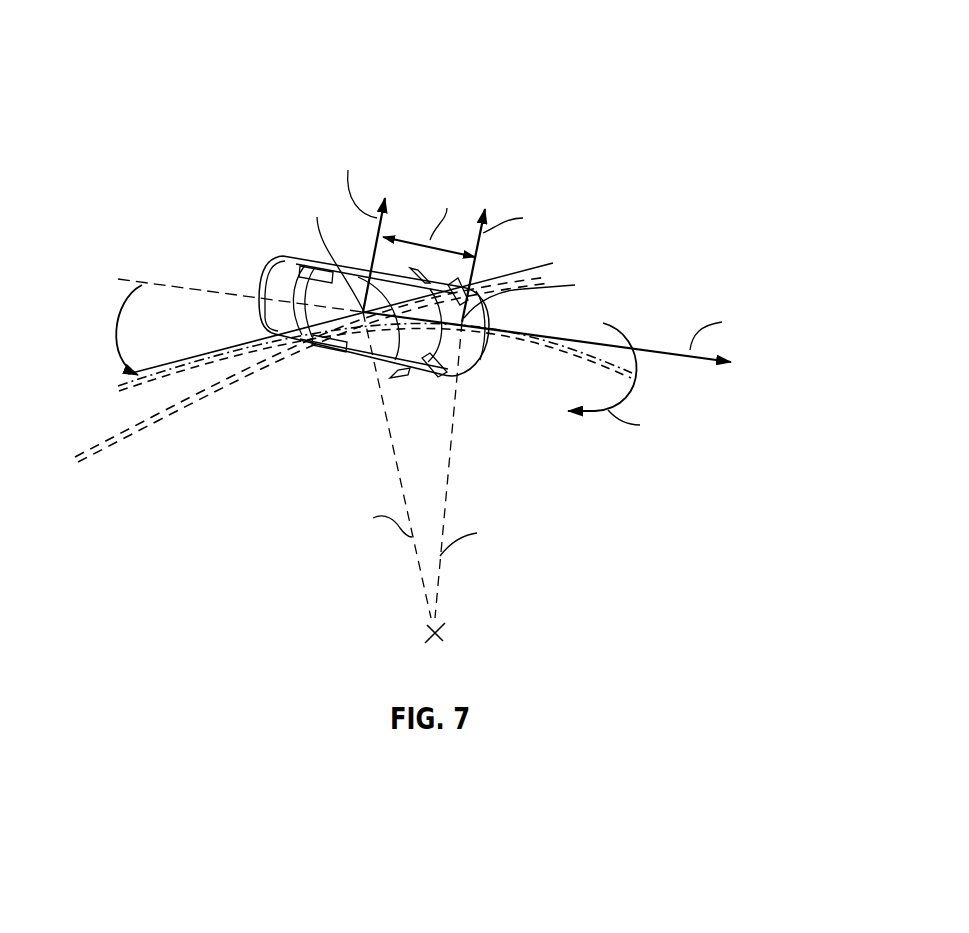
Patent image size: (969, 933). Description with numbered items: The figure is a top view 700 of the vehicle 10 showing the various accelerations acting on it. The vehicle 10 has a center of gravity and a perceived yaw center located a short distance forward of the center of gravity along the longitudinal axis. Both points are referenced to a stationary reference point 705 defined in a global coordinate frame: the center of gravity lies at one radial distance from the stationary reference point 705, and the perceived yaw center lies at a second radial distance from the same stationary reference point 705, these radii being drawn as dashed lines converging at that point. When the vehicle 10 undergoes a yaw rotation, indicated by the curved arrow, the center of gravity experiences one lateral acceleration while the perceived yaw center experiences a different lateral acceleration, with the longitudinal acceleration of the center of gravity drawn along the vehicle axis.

The top view 700 is at (126, 47).
The vehicle 10 is at (329, 384).
The stationary reference point 705 is at (438, 632).